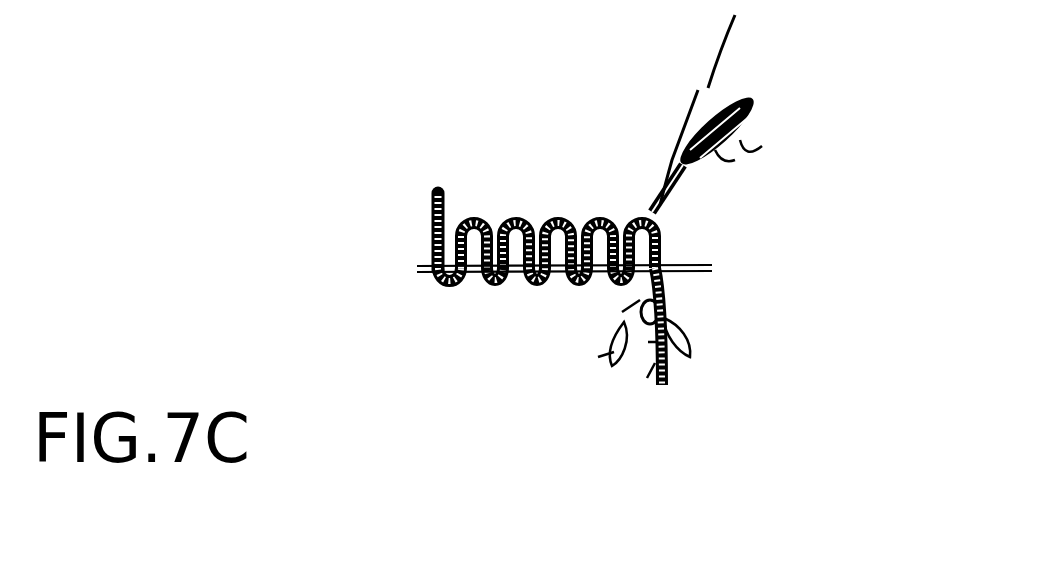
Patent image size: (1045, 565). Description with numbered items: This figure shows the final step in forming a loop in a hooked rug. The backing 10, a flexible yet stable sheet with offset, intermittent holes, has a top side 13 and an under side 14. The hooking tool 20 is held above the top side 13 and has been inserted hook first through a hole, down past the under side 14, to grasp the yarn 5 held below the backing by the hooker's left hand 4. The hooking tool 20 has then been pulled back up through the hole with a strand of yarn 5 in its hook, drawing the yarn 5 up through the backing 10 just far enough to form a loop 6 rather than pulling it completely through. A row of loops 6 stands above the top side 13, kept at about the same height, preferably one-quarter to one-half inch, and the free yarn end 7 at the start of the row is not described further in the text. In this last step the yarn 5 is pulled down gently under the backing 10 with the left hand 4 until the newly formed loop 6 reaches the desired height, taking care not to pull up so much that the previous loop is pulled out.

The left hand 4 is at (648, 288).
The yarn 5 is at (673, 381).
The loop 6 is at (483, 217).
The thread end 7 is at (426, 216).
The backing 10 is at (426, 272).
The top side 13 is at (688, 266).
The under side 14 is at (687, 273).
The hooking tool 20 is at (752, 102).